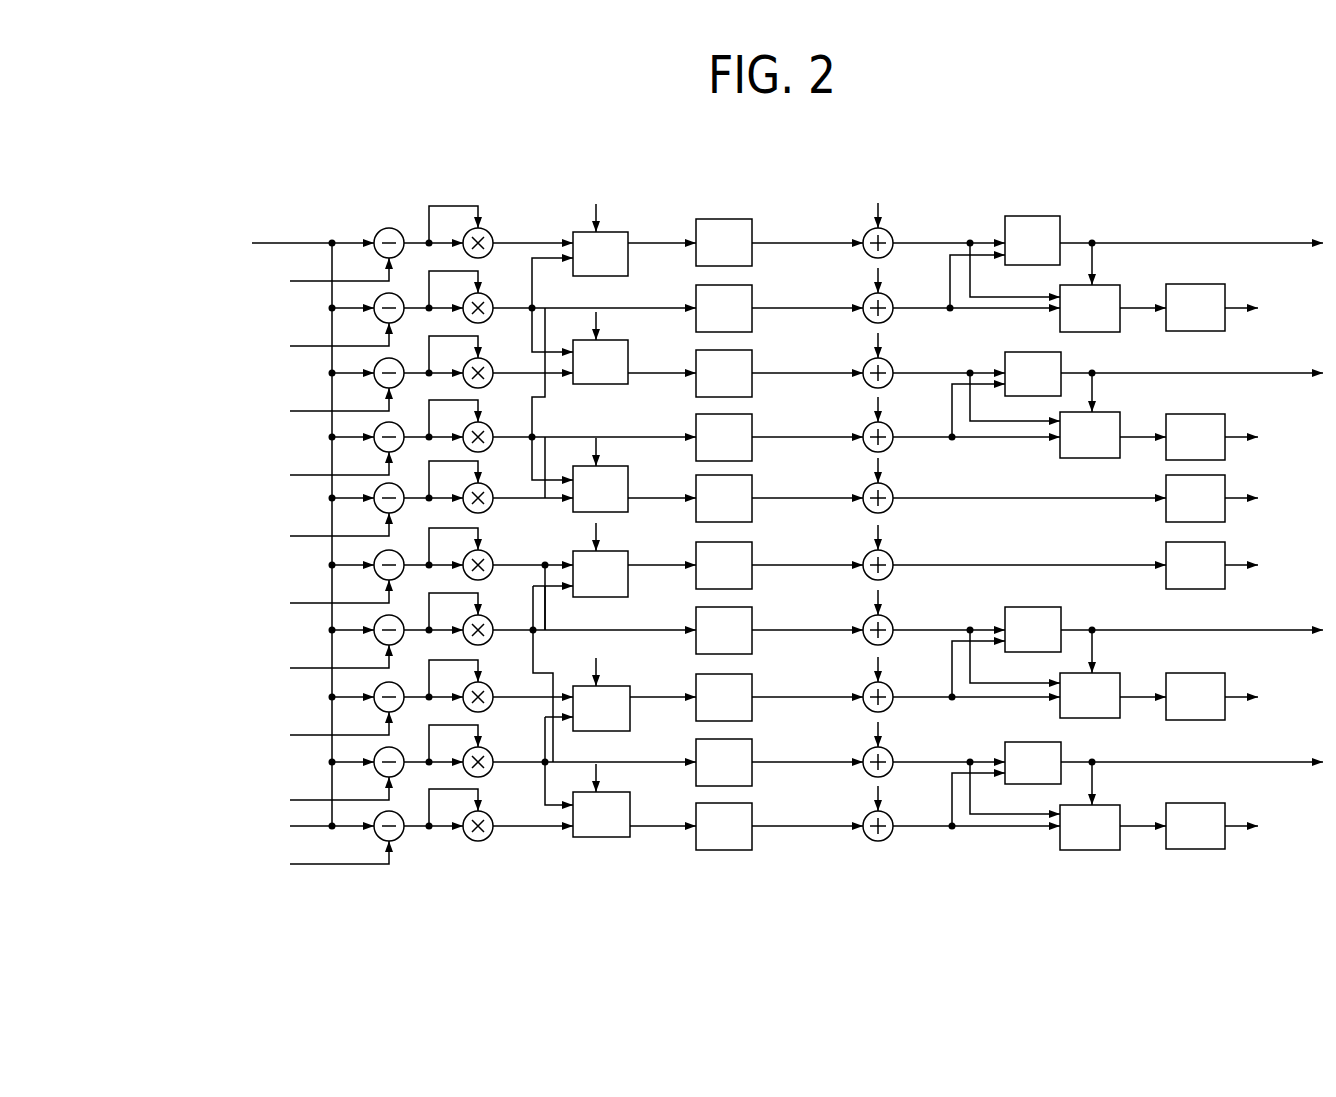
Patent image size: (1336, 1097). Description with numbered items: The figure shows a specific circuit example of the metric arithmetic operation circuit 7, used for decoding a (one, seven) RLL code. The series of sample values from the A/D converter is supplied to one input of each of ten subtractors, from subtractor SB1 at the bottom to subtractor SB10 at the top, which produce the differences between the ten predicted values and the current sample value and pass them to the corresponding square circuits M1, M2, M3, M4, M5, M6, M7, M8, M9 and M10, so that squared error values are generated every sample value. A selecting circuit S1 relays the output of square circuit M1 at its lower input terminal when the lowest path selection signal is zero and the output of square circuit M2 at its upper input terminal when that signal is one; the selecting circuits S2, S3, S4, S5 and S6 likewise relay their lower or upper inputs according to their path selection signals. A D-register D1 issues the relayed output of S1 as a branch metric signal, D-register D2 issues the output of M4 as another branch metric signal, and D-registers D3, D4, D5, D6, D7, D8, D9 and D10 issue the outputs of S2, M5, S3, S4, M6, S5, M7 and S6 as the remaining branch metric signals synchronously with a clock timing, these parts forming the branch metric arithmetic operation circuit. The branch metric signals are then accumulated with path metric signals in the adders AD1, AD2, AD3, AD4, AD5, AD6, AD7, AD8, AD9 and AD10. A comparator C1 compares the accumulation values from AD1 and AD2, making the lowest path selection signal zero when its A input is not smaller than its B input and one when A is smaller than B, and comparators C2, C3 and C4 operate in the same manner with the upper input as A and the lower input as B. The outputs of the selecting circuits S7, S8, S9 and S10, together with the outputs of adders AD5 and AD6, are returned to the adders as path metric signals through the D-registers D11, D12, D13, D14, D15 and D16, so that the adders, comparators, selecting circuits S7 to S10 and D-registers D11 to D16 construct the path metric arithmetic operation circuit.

The metric arithmetic operation circuit 7 is at (728, 165).
The subtractor SB10 is at (384, 221).
The subtractor SB1 is at (399, 838).
The square circuit M10 is at (490, 232).
The square circuit M9 is at (490, 297).
The square circuit M8 is at (490, 362).
The square circuit M7 is at (490, 426).
The square circuit M6 is at (490, 487).
The square circuit M5 is at (490, 554).
The square circuit M4 is at (490, 619).
The square circuit M3 is at (490, 686).
The square circuit M2 is at (490, 751).
The square circuit M1 is at (490, 815).
The selecting circuit S1 is at (634, 795).
The selecting circuit S2 is at (634, 689).
The selecting circuit S3 is at (634, 555).
The selecting circuit S4 is at (634, 470).
The selecting circuit S5 is at (634, 343).
The selecting circuit S6 is at (634, 235).
The selecting circuit S7 is at (1113, 827).
The selecting circuit S8 is at (1113, 695).
The selecting circuit S9 is at (1113, 435).
The selecting circuit S10 is at (1113, 308).
The D-register D1 is at (779, 826).
The D-register D2 is at (779, 762).
The D-register D3 is at (779, 697).
The D-register D4 is at (779, 630).
The D-register D5 is at (779, 565).
The D-register D6 is at (779, 498).
The D-register D7 is at (779, 437).
The D-register D8 is at (779, 373).
The D-register D9 is at (779, 308).
The D-register D10 is at (779, 242).
The D-register D11 is at (1236, 824).
The D-register D12 is at (1236, 694).
The D-register D13 is at (1236, 563).
The D-register D14 is at (1236, 497).
The D-register D15 is at (1236, 435).
The D-register D16 is at (1236, 306).
The adder AD1 is at (865, 814).
The adder AD2 is at (865, 750).
The adder AD3 is at (865, 685).
The adder AD4 is at (865, 618).
The adder AD5 is at (865, 553).
The adder AD6 is at (865, 486).
The adder AD7 is at (865, 425).
The adder AD8 is at (865, 361).
The adder AD9 is at (865, 296).
The adder AD10 is at (865, 231).
The comparator C1 is at (1164, 773).
The comparator C2 is at (1164, 640).
The comparator C3 is at (1164, 382).
The comparator C4 is at (1164, 250).